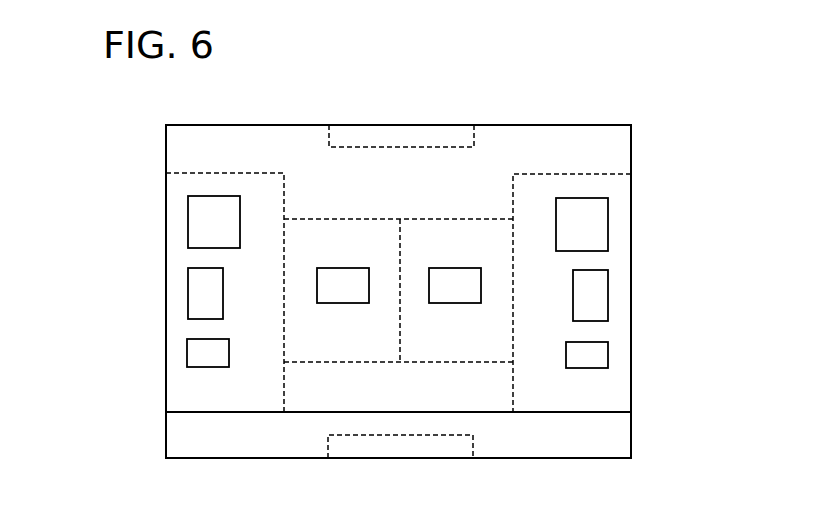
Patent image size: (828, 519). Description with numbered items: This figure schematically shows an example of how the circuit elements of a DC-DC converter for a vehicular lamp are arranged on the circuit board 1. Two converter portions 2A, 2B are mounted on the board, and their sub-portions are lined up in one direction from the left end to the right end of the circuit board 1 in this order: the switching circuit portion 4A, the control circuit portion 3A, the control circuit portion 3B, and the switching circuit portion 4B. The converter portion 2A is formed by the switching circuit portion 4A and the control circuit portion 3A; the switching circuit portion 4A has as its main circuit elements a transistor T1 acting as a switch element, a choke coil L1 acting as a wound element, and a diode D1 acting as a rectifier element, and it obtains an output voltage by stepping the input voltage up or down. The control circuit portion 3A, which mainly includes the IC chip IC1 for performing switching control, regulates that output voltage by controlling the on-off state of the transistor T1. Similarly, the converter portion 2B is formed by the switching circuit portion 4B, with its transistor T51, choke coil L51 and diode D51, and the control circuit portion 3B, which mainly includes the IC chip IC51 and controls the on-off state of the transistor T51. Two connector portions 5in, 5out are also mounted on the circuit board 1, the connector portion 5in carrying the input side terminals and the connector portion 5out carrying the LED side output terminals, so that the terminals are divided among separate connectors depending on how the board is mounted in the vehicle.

The circuit board 1 is at (618, 147).
The connector portion 5in is at (423, 133).
The connector portion 5out is at (402, 452).
The converter portion 2A is at (98, 248).
The switching circuit portion 4A is at (171, 281).
The control circuit portion 3A is at (308, 290).
The converter portion 2B is at (707, 255).
The switching circuit portion 4B is at (629, 283).
The control circuit portion 3B is at (566, 300).
The choke coil L1 is at (214, 222).
The transistor T1 is at (205, 293).
The diode D1 is at (208, 353).
The IC chip IC1 is at (343, 285).
The IC chip IC51 is at (455, 285).
The choke coil L51 is at (582, 224).
The transistor T51 is at (590, 295).
The diode D51 is at (587, 355).